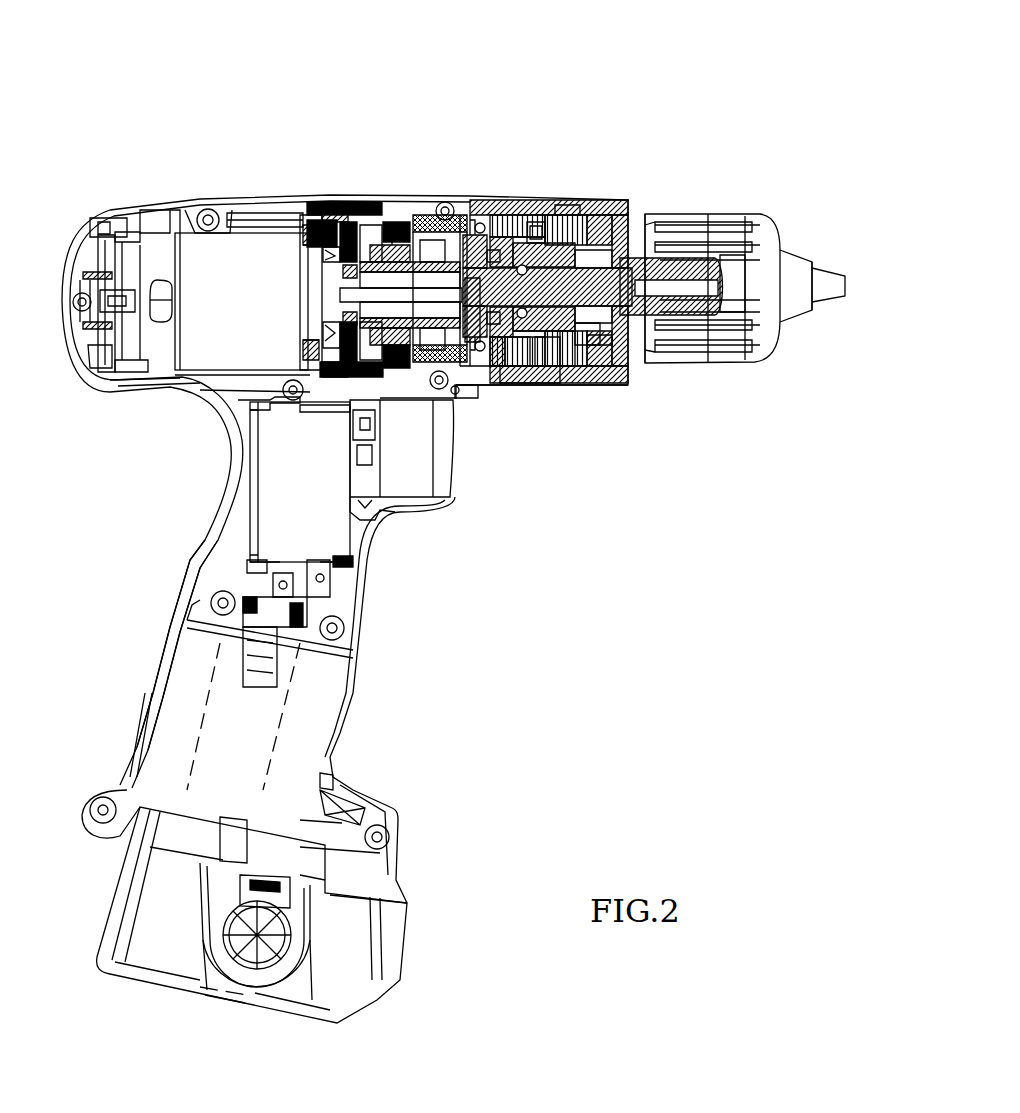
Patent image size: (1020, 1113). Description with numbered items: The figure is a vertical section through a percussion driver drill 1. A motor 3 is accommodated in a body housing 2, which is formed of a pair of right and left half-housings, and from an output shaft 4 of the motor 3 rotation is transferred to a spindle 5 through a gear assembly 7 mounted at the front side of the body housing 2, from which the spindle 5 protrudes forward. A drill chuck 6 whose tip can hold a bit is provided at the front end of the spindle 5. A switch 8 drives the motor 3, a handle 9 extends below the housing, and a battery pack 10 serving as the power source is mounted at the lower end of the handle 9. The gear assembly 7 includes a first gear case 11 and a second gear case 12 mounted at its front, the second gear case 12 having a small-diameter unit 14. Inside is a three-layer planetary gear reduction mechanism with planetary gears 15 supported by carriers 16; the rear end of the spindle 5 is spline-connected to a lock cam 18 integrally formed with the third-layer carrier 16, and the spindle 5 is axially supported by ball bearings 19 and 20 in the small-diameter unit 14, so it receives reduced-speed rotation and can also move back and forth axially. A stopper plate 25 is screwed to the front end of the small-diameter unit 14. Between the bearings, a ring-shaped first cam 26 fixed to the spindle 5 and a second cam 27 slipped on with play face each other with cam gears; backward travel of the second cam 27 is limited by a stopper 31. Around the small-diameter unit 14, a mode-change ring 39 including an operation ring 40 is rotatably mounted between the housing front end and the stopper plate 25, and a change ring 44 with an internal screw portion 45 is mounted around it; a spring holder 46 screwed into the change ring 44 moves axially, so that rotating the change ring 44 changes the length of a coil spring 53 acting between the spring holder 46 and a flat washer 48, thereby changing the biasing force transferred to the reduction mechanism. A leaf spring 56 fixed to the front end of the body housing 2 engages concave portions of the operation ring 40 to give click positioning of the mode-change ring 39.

The percussion driver drill 1 is at (556, 96).
The body housing 2 is at (232, 198).
The motor 3 is at (200, 255).
The output shaft 4 is at (302, 222).
The spindle 5 is at (634, 240).
The drill chuck 6 is at (768, 210).
The gear assembly 7 is at (484, 214).
The switch 8 is at (345, 530).
The handle 9 is at (200, 558).
The battery pack 10 is at (345, 975).
The first gear case 11 is at (362, 218).
The second gear case 12 is at (455, 205).
The small-diameter unit 14 is at (512, 214).
The planetary gears 15 is at (333, 217).
The carriers 16 is at (395, 206).
The lock cam 18 is at (511, 384).
The ball bearing 19 is at (547, 384).
The ball bearing 20 is at (606, 378).
The stopper plate 25 is at (623, 212).
The first cam 26 is at (588, 212).
The second cam 27 is at (532, 214).
The stopper 31 is at (500, 214).
The mode-change ring 39 is at (530, 392).
The operation ring 40 is at (496, 384).
The change ring 44 is at (567, 208).
The internal screw portion 45 is at (585, 384).
The spring holder 46 is at (572, 384).
The flat washer 48 is at (470, 214).
The coil spring 53 is at (546, 214).
The leaf spring 56 is at (465, 387).